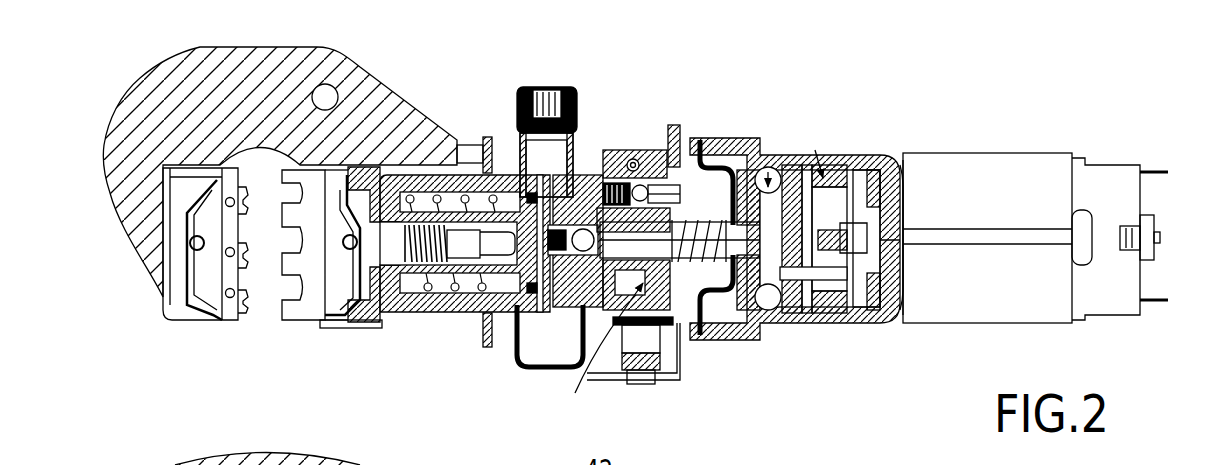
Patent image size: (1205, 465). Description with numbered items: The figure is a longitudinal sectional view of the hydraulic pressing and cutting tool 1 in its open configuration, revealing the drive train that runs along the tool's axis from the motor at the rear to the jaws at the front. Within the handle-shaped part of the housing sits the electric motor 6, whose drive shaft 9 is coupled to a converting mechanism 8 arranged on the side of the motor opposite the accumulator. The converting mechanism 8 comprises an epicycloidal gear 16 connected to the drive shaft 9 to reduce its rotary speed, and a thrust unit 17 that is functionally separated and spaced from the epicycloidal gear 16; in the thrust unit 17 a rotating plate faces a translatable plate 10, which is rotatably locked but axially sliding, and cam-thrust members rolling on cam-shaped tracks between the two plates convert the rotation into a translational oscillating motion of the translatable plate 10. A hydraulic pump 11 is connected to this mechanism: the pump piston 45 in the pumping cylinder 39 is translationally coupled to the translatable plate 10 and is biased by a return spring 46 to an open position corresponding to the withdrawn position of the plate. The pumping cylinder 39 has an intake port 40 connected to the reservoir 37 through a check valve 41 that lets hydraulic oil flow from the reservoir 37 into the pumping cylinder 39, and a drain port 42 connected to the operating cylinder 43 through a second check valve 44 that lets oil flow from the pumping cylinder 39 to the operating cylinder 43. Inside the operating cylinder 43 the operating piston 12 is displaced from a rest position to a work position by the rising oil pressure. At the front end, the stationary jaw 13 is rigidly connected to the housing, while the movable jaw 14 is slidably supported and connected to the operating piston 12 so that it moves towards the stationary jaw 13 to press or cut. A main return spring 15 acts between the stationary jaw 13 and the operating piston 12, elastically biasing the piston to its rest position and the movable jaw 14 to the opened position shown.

The hydraulic pressing and cutting tool 1 is at (970, 0).
The electric motor 6 is at (972, 162).
The converting mechanism 8 is at (797, 340).
The drive shaft 9 is at (868, 150).
The translatable plate 10 is at (750, 150).
The hydraulic pump 11 is at (599, 355).
The operating piston 12 is at (460, 300).
The stationary jaw 13 is at (180, 300).
The movable jaw 14 is at (318, 300).
The main return spring 15 is at (395, 320).
The epicycloidal gear 16 is at (815, 148).
The thrust unit 17 is at (769, 165).
The reservoir 37 is at (745, 300).
The pumping cylinder 39 is at (640, 385).
The intake port 40 is at (633, 158).
The check valve 41 is at (672, 124).
The drain port 42 is at (605, 135).
The operating cylinder 43 is at (463, 140).
The check valve 44 is at (515, 345).
The pump piston 45 is at (565, 365).
The return spring 46 is at (703, 138).